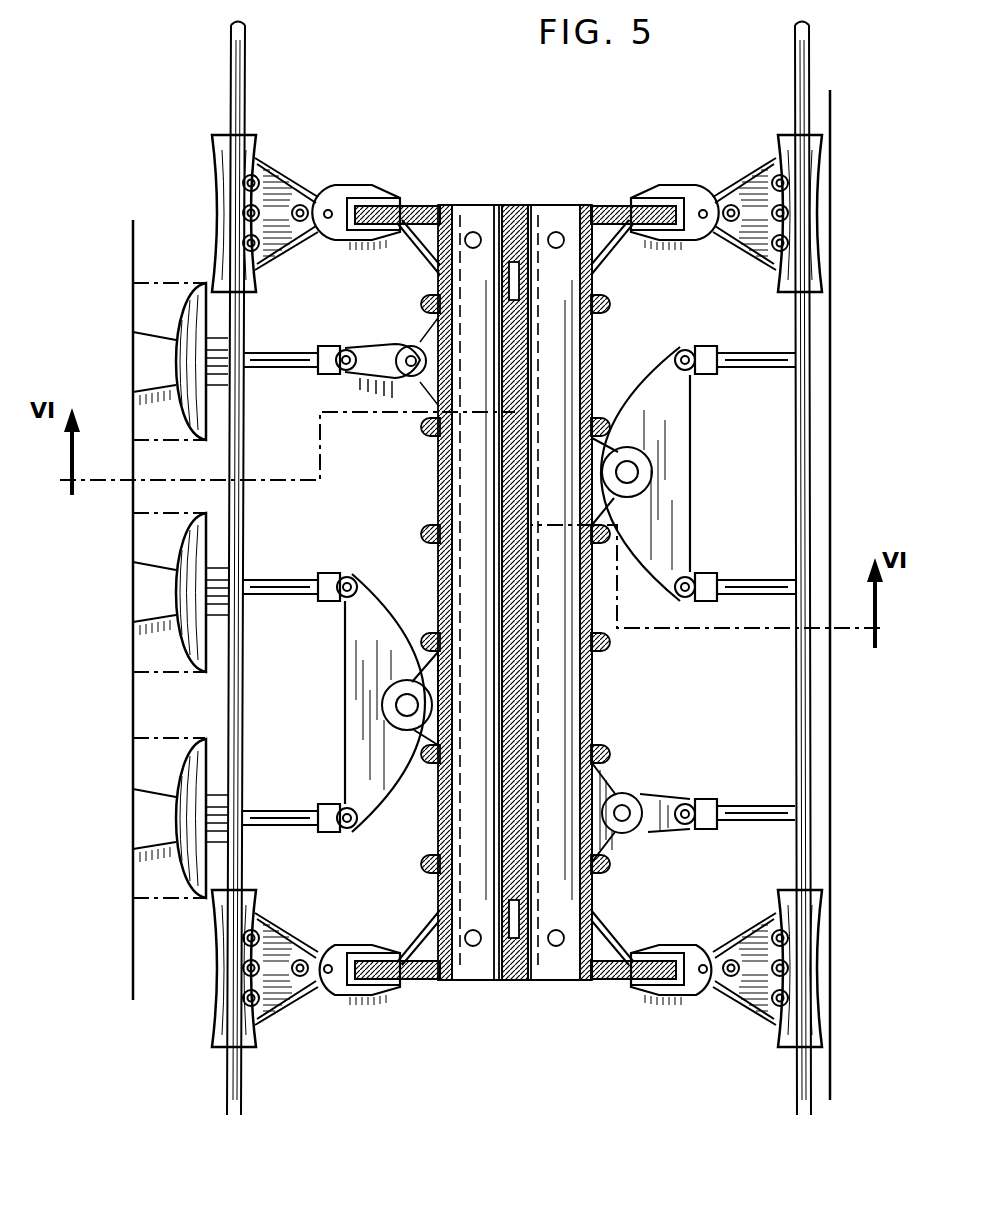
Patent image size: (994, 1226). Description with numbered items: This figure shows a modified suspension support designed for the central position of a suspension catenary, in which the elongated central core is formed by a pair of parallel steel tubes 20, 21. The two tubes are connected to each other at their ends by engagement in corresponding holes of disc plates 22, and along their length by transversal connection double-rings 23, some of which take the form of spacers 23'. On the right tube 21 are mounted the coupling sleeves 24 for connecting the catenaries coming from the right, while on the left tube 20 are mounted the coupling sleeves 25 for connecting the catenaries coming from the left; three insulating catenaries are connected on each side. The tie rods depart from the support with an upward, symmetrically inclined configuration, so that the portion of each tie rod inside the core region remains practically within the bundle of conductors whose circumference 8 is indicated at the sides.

The circumference 8 is at (133, 935).
The left steel tube 20 is at (470, 965).
The right steel tube 21 is at (553, 962).
The disc plate 22 is at (420, 213).
The transversal connection double-ring 23 is at (542, 598).
The spacer 23' is at (625, 653).
The coupling sleeve 24 is at (598, 450).
The coupling sleeve 25 is at (428, 400).